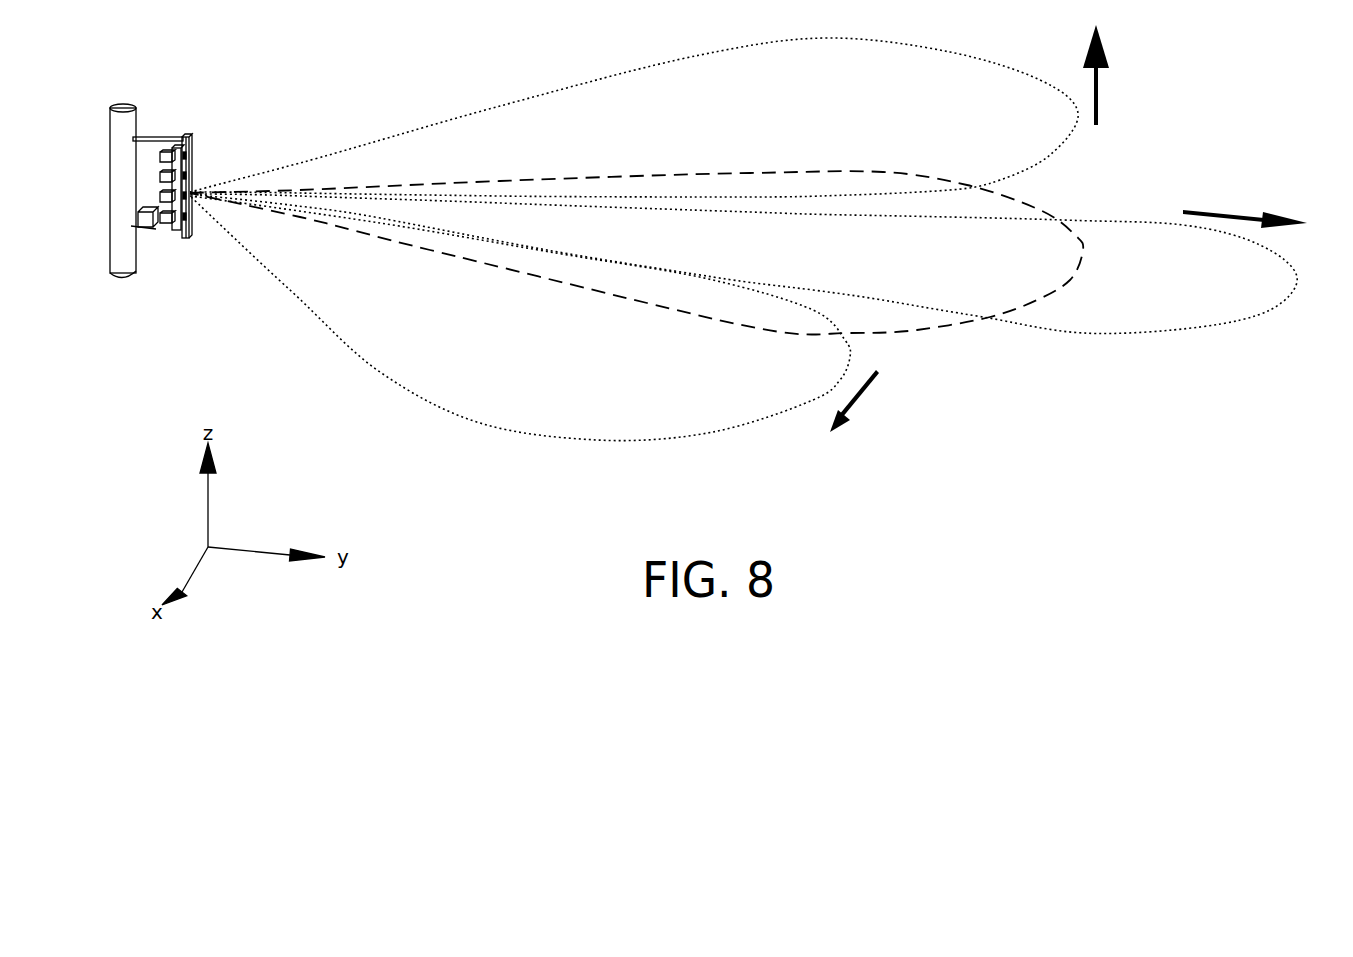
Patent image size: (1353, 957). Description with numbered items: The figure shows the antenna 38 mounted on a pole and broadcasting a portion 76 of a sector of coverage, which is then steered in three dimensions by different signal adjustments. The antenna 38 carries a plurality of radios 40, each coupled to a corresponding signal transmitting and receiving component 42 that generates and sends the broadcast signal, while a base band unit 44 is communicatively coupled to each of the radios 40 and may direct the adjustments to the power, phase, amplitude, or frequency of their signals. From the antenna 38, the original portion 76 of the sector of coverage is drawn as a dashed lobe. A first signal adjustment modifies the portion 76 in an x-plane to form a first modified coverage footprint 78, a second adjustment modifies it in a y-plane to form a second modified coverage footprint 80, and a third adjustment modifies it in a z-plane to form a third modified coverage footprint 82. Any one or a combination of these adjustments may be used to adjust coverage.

The antenna 38 is at (165, 121).
The radios 40 is at (161, 157).
The signal transmitting and receiving components 42 is at (190, 152).
The base band unit 44 is at (145, 228).
The portion of a sector of coverage 76 is at (907, 320).
The first modified coverage footprint 78 is at (703, 415).
The second modified coverage footprint 80 is at (1182, 312).
The third modified coverage footprint 82 is at (862, 43).